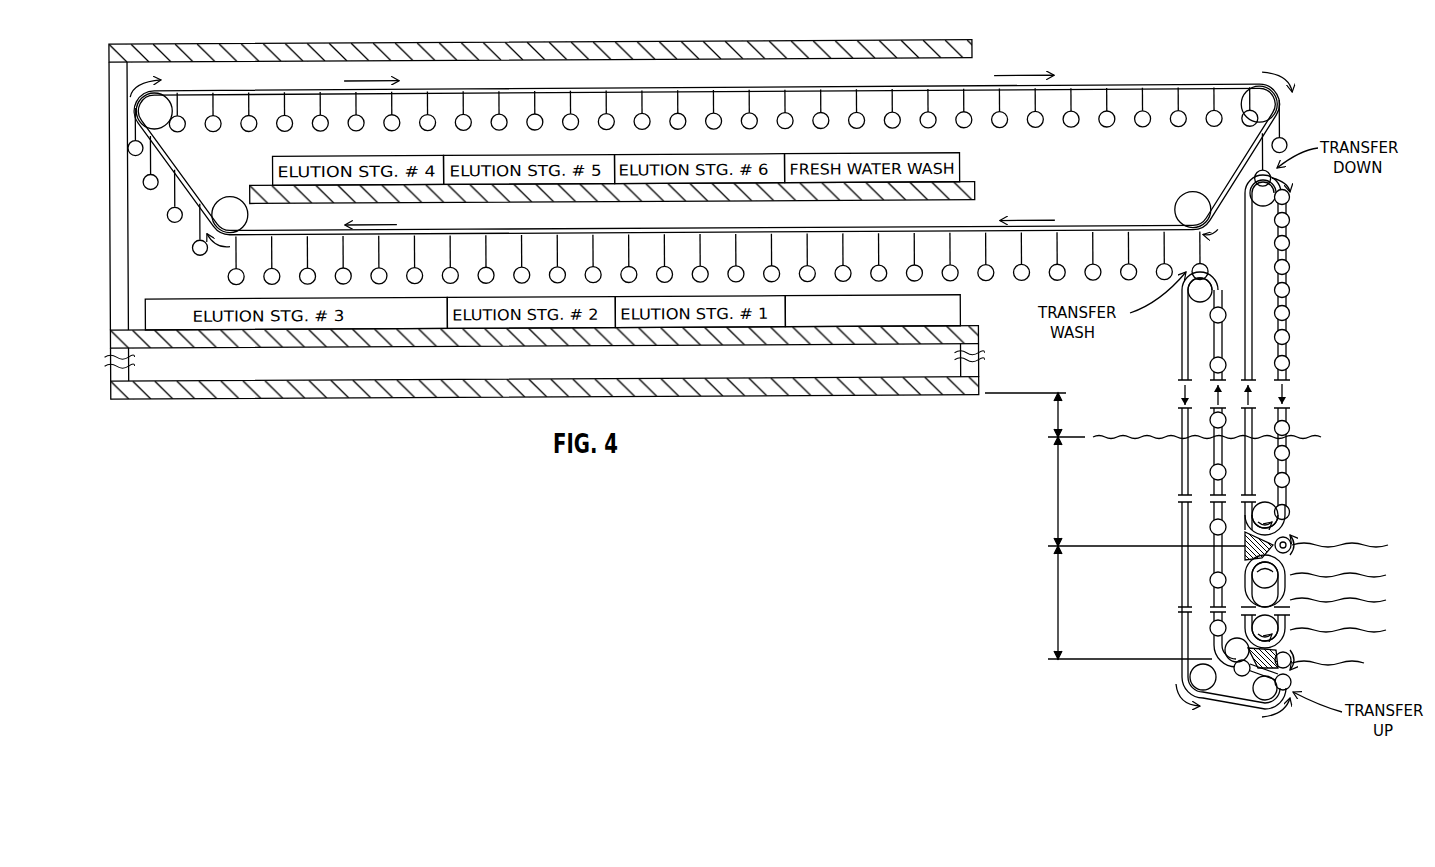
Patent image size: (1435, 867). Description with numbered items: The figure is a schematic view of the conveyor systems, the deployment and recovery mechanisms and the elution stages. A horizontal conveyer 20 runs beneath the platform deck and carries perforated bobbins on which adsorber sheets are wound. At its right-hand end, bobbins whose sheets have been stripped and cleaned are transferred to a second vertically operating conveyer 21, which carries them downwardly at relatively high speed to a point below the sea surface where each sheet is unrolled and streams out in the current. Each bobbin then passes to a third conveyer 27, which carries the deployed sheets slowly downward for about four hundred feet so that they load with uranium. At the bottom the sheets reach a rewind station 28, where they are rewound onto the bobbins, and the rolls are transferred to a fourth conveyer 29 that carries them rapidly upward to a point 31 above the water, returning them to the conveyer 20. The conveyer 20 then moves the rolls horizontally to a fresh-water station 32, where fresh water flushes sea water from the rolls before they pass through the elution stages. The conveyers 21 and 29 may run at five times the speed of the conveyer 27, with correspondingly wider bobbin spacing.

The conveyer 20 is at (1127, 88).
The second vertically operating conveyer 21 is at (1290, 219).
The third conveyer 27 is at (1287, 621).
The rewind station 28 is at (1258, 667).
The fourth conveyer 29 is at (1250, 705).
The point above the surface of the water 31 is at (1203, 270).
The fresh-water station 32 is at (950, 305).